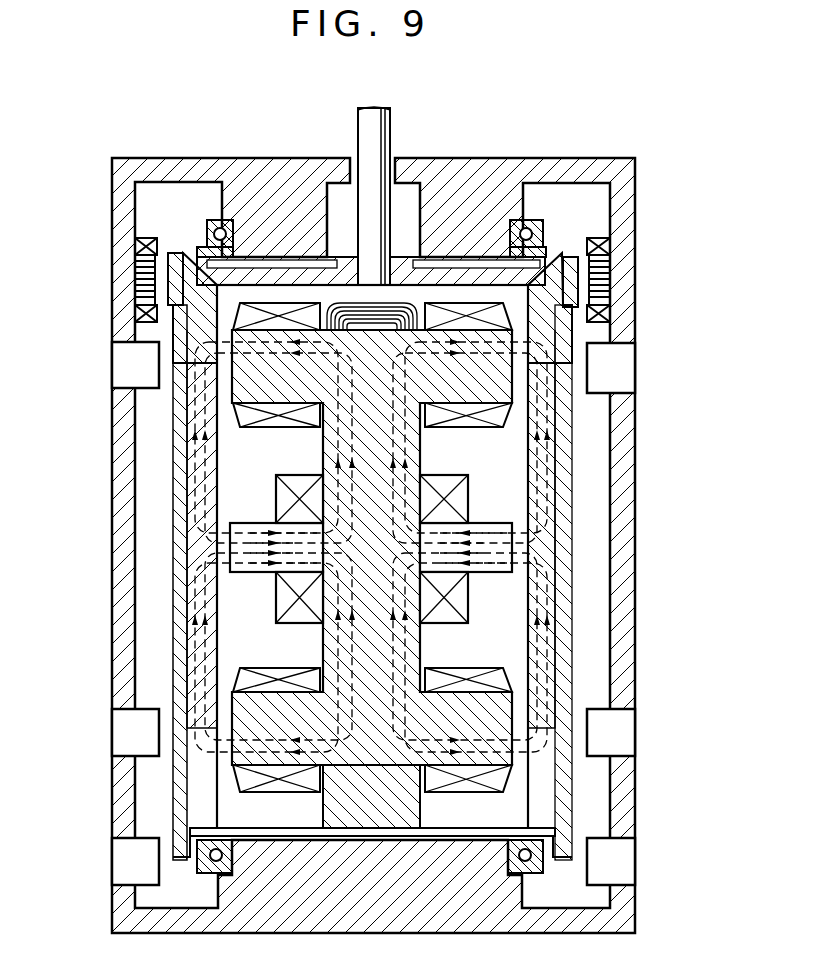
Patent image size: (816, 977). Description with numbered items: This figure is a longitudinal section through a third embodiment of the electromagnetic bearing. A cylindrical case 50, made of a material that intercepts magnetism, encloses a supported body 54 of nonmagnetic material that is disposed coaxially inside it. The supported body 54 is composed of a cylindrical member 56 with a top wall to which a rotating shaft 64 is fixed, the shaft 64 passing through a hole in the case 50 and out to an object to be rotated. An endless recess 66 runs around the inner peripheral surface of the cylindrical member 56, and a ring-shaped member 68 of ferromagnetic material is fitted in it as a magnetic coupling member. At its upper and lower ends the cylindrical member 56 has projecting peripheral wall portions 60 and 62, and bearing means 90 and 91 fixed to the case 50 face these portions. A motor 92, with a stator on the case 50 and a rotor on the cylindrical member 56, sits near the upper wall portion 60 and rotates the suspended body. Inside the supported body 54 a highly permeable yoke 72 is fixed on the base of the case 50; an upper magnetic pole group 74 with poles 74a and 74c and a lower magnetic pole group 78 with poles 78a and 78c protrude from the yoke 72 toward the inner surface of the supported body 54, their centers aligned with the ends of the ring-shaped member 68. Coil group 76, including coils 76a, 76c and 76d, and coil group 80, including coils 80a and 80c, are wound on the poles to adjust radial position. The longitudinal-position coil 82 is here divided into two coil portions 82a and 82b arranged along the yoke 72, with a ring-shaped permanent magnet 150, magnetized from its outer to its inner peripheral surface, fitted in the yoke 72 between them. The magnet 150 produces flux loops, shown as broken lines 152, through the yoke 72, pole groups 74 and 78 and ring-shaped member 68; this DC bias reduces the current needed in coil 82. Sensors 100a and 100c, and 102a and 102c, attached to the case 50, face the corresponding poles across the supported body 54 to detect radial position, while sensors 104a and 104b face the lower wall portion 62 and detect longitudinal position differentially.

The cylindrical case 50 is at (475, 165).
The supported body 54 is at (592, 515).
The cylindrical member 56 is at (572, 568).
The upper projecting peripheral wall portion 60 is at (192, 240).
The lower projecting peripheral wall portion 62 is at (185, 852).
The rotating shaft 64 is at (360, 135).
The endless recess 66 is at (188, 515).
The ring-shaped member 68 is at (212, 458).
The yoke 72 is at (338, 660).
The magnetic pole group 74 is at (212, 342).
The magnetic pole 74a is at (245, 388).
The magnetic pole 74c is at (518, 330).
The coil group 76 is at (175, 262).
The coil 76a is at (270, 307).
The coil 76c is at (468, 307).
The coil 76d is at (348, 303).
The magnetic pole group 78 is at (240, 670).
The magnetic pole 78a is at (236, 773).
The magnetic pole 78c is at (510, 755).
The coil group 80 is at (238, 782).
The coil 80a is at (278, 790).
The coil 80c is at (472, 790).
The coil 82 is at (474, 622).
The coil portion 82a is at (440, 478).
The coil portion 82b is at (466, 600).
The bearing means 90 is at (528, 233).
The bearing means 91 is at (533, 875).
The motor 92 is at (590, 245).
The sensor 100a is at (122, 362).
The sensor 100c is at (600, 360).
The sensor 102a is at (122, 736).
The sensor 102c is at (623, 738).
The sensor 104a is at (122, 860).
The sensor 104b is at (623, 862).
The ring-shaped permanent magnet 150 is at (500, 512).
The broken lines 152 is at (338, 452).